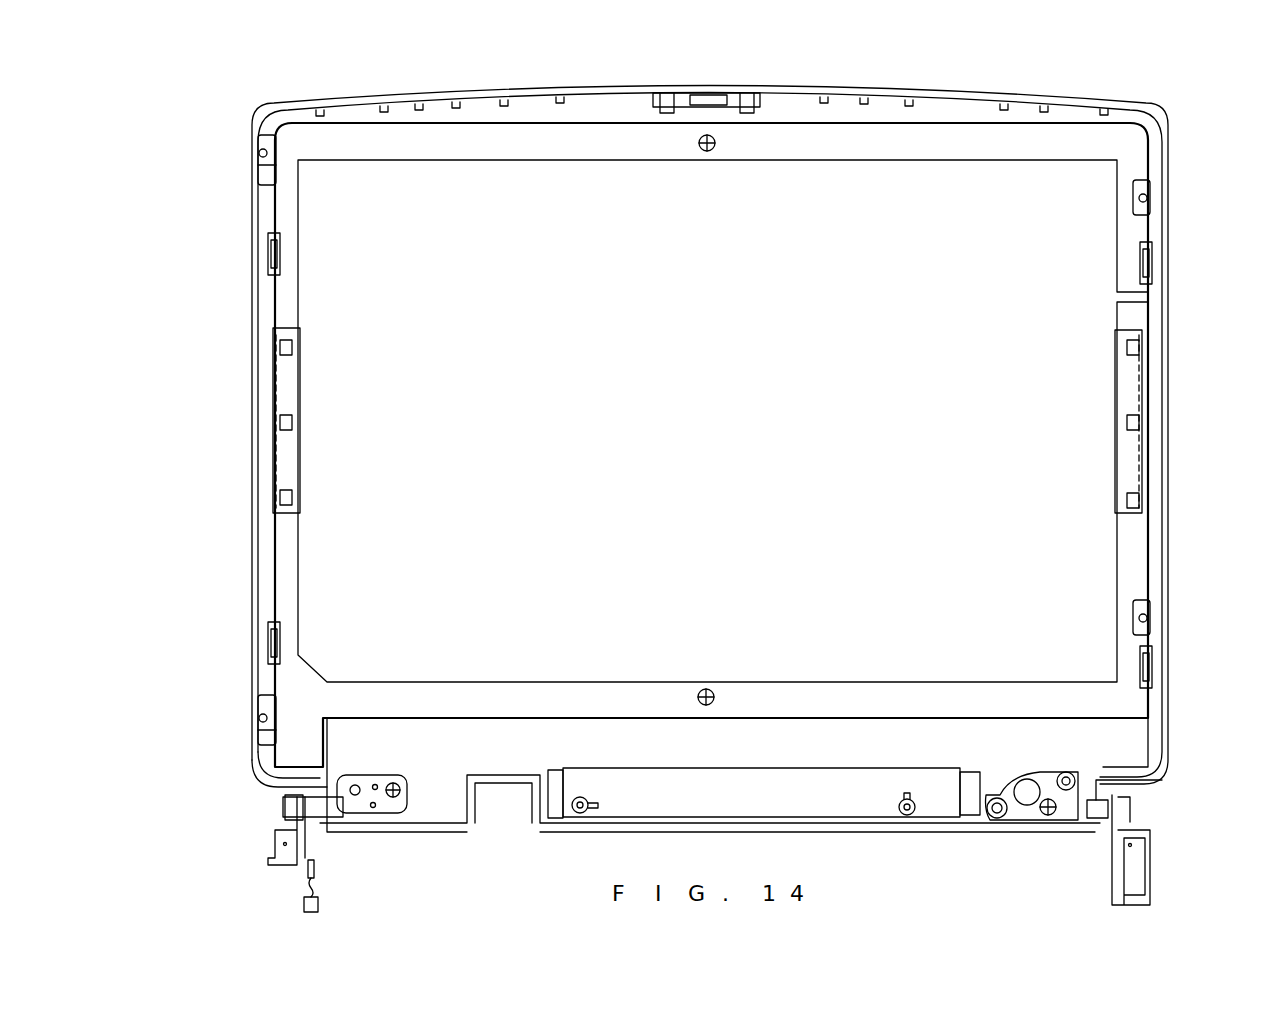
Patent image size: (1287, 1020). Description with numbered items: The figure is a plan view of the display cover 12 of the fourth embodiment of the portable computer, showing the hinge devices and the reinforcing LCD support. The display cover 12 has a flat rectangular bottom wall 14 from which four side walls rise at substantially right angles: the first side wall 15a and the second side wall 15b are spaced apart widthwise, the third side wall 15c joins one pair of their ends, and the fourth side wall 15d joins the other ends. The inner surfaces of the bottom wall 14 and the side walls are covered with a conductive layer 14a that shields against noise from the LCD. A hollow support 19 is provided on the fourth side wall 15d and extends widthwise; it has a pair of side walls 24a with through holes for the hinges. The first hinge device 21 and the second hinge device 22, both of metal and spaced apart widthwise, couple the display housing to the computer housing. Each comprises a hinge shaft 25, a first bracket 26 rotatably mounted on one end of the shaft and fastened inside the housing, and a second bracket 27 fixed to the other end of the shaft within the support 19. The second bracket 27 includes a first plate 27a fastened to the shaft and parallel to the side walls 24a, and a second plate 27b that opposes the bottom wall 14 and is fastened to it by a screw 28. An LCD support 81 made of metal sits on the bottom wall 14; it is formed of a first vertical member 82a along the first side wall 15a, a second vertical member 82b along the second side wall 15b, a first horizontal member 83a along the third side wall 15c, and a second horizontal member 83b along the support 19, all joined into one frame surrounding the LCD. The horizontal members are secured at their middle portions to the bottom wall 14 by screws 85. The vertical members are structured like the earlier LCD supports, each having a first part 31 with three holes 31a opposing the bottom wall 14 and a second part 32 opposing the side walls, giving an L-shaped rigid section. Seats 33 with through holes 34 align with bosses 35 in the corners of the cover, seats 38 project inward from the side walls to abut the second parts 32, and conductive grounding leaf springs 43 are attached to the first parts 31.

The display cover 12 is at (270, 382).
The bottom wall 14 is at (476, 200).
The conductive layer 14a is at (787, 250).
The first side wall 15a is at (268, 508).
The second side wall 15b is at (1166, 416).
The third side wall 15c is at (626, 92).
The fourth side wall 15d is at (285, 792).
The support 19 is at (910, 818).
The first hinge device 21 is at (324, 838).
The second hinge device 22 is at (1104, 838).
The side wall of support 24a is at (287, 808).
The hinge shaft 25 is at (314, 800).
The first bracket 26 is at (290, 840).
The second bracket 27 is at (378, 792).
The first plate 27a is at (350, 815).
The second plate 27b is at (353, 790).
The screw 28 is at (400, 790).
The first part 31 is at (296, 450).
The holes 31a is at (290, 346).
The second part 32 is at (276, 398).
The seats 33 is at (278, 165).
The through hole 34 is at (264, 140).
The bosses 35 is at (1140, 617).
The seats 38 is at (270, 252).
The grounding leaf springs 43 is at (312, 466).
The LCD support 81 is at (586, 153).
The first vertical member 82a is at (286, 560).
The second vertical member 82b is at (1130, 553).
The first horizontal member 83a is at (764, 143).
The second horizontal member 83b is at (776, 690).
The screws 85 is at (700, 157).